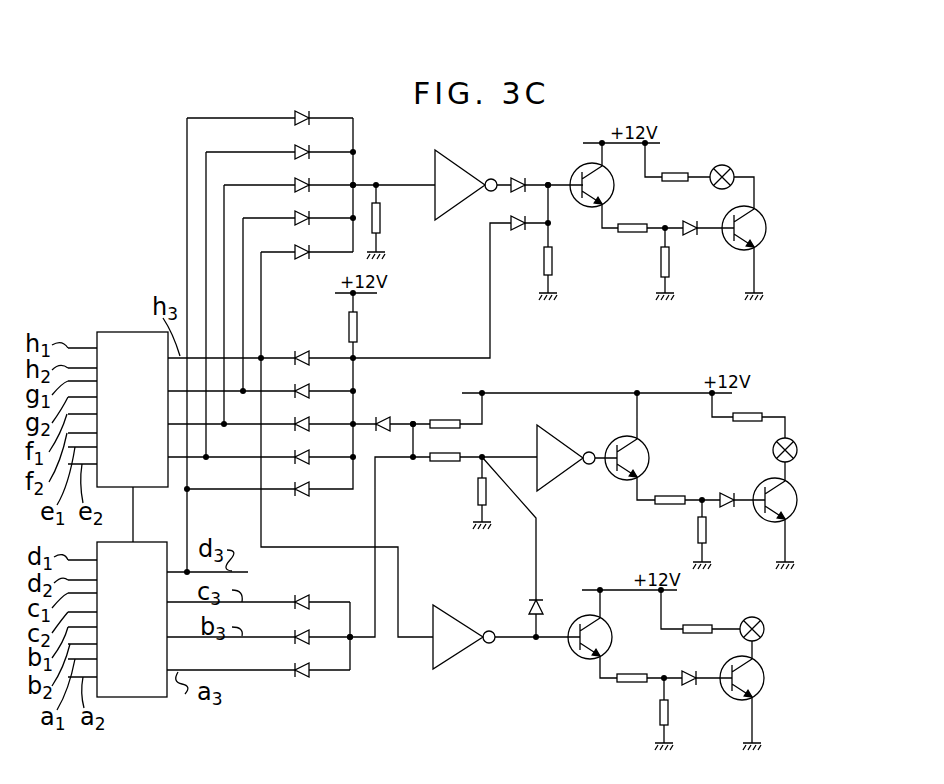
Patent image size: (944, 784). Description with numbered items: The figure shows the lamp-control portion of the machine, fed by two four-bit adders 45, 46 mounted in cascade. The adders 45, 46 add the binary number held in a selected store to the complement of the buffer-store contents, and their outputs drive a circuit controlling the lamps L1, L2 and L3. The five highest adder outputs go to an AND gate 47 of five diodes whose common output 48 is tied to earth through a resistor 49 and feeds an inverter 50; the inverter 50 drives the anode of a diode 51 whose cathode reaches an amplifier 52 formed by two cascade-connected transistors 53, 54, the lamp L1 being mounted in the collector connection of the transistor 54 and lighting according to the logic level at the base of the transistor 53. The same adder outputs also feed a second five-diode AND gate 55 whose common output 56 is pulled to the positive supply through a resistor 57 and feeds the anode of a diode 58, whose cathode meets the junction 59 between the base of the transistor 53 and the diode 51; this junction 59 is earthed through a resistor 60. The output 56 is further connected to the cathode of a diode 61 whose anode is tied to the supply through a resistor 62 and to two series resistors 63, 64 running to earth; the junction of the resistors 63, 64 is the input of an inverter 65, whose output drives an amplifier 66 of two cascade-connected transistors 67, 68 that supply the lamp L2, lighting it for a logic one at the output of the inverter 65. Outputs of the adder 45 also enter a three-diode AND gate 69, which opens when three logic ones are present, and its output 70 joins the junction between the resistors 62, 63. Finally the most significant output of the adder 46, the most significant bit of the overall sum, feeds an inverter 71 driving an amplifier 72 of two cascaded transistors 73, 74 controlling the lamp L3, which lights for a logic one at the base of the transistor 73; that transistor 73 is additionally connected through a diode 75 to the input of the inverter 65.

The adder 45 is at (137, 698).
The adder 46 is at (135, 331).
The AND gate 47 is at (297, 108).
The common output 48 is at (355, 184).
The resistor 49 is at (380, 218).
The inverter 50 is at (470, 170).
The diode 51 is at (512, 177).
The amplifier 52 is at (676, 166).
The transistor 53 is at (614, 193).
The transistor 54 is at (764, 224).
The AND gate 55 is at (300, 350).
The common output 56 is at (352, 424).
The resistor 57 is at (358, 322).
The diode 58 is at (514, 231).
The junction 59 is at (548, 182).
The resistor 60 is at (553, 259).
The diode 61 is at (392, 424).
The resistor 62 is at (448, 434).
The resistor 63 is at (433, 462).
The resistor 64 is at (480, 492).
The inverter 65 is at (558, 446).
The amplifier 66 is at (677, 478).
The transistor 67 is at (646, 448).
The transistor 68 is at (770, 522).
The AND gate 69 is at (308, 598).
The output 70 is at (351, 640).
The inverter 71 is at (453, 620).
The amplifier 72 is at (655, 665).
The transistor 73 is at (574, 658).
The transistor 74 is at (738, 703).
The diode 75 is at (528, 606).
The lamp L1 is at (733, 170).
The lamp L2 is at (762, 468).
The lamp L3 is at (768, 619).